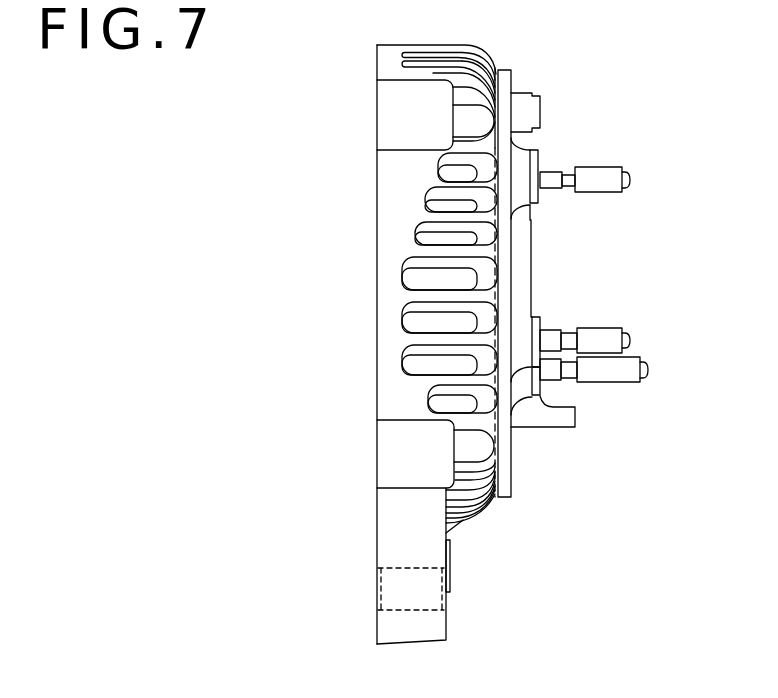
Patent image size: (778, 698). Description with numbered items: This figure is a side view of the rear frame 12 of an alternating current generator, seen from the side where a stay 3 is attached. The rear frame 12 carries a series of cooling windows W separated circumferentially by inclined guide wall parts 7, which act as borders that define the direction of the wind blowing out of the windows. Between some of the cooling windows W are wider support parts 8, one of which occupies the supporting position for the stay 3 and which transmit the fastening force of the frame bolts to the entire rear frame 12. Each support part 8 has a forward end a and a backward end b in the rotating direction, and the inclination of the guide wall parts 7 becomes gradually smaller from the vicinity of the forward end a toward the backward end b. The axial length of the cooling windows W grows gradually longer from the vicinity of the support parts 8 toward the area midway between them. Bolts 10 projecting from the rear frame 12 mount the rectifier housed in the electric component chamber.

The stay 3 is at (393, 625).
The guide wall part 7 is at (438, 252).
The support part 8 is at (470, 122).
The bolt 10 is at (597, 177).
The rear frame 12 is at (470, 542).
The cooling window W is at (415, 283).
The forward end of the support part a is at (428, 410).
The backward end of the support part b is at (438, 157).